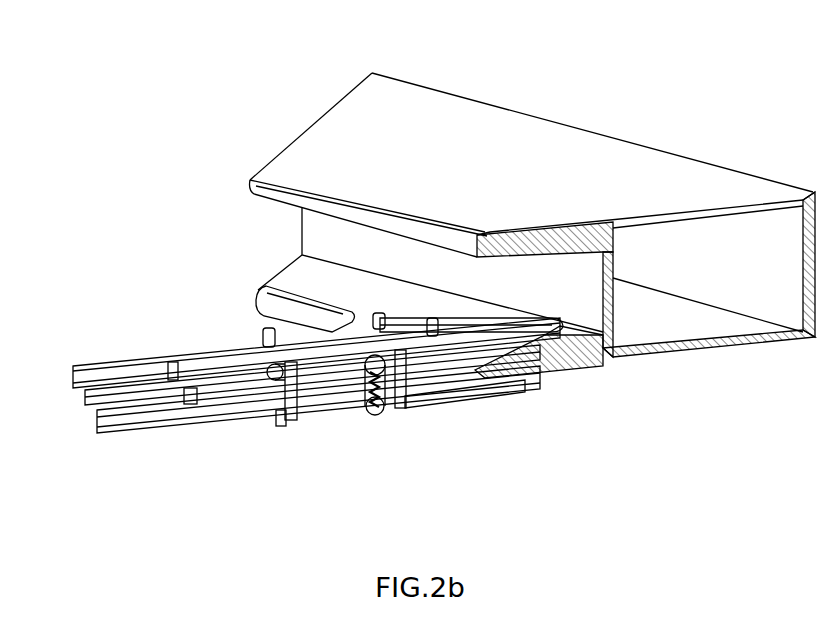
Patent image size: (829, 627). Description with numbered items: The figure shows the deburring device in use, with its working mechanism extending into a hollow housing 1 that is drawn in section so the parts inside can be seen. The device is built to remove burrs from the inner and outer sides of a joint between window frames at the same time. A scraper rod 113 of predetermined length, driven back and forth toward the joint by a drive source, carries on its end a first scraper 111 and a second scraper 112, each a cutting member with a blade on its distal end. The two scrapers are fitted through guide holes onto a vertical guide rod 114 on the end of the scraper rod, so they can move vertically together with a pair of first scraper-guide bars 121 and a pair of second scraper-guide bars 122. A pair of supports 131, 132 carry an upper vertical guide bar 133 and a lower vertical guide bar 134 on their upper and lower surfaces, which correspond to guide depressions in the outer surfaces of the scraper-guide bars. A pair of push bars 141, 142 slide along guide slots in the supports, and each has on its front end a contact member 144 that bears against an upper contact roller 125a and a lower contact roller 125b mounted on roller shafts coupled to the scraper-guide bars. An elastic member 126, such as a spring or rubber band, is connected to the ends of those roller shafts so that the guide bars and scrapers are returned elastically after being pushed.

The housing 1 is at (587, 150).
The first scraper 111 is at (554, 375).
The second scraper 112 is at (533, 376).
The scraper rod 113 is at (98, 402).
The vertical guide rod 114 is at (410, 310).
The first scraper-guide bar 121 is at (447, 320).
The second scraper-guide bar 122 is at (464, 380).
The upper contact roller 125a is at (268, 290).
The lower contact roller 125b is at (368, 418).
The elastic member 126 is at (396, 406).
The support 131 is at (175, 364).
The support 132 is at (198, 404).
The upper vertical guide bar 133 is at (263, 335).
The lower vertical guide bar 134 is at (290, 418).
The push bar 141 is at (125, 372).
The push bar 142 is at (140, 426).
The contact member 144 is at (362, 392).